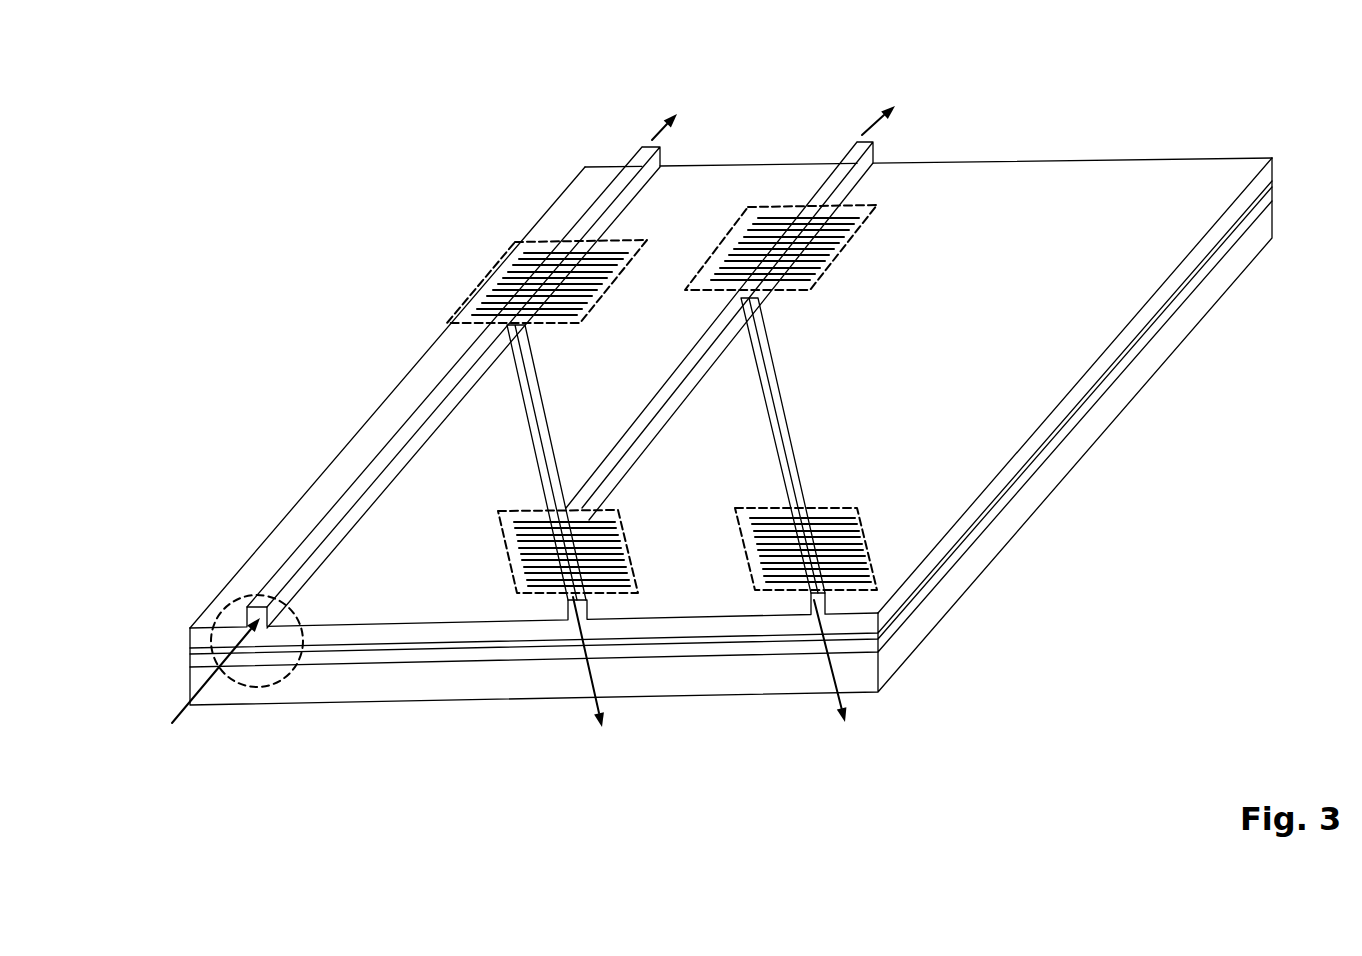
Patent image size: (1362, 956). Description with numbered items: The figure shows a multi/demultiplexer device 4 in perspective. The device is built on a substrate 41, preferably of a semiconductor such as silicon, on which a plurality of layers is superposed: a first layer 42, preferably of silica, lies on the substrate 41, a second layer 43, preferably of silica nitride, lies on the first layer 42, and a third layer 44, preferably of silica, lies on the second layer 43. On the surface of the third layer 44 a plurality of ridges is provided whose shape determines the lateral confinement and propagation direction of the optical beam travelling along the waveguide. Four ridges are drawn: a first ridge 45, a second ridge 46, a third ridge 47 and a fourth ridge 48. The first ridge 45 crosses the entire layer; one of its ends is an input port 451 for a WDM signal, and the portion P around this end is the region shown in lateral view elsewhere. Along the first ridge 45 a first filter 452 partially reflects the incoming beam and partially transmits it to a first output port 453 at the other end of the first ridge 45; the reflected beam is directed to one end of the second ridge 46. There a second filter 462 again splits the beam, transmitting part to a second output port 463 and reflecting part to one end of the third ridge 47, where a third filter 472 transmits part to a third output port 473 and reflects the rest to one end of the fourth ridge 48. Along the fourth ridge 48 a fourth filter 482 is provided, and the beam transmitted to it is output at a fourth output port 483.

The multi/demultiplexer device 4 is at (465, 159).
The substrate 41 is at (758, 673).
The first layer 42 is at (385, 657).
The second layer 43 is at (427, 648).
The third layer 44 is at (690, 627).
The first ridge 45 is at (355, 491).
The input port 451 is at (185, 708).
The first filter 452 is at (483, 283).
The first output port 453 is at (655, 140).
The second ridge 46 is at (538, 426).
The second filter 462 is at (598, 507).
The second output port 463 is at (590, 675).
The third ridge 47 is at (703, 329).
The third filter 472 is at (830, 270).
The third output port 473 is at (865, 130).
The fourth ridge 48 is at (777, 405).
The fourth filter 482 is at (868, 533).
The fourth output port 483 is at (838, 672).
The portion P is at (240, 593).